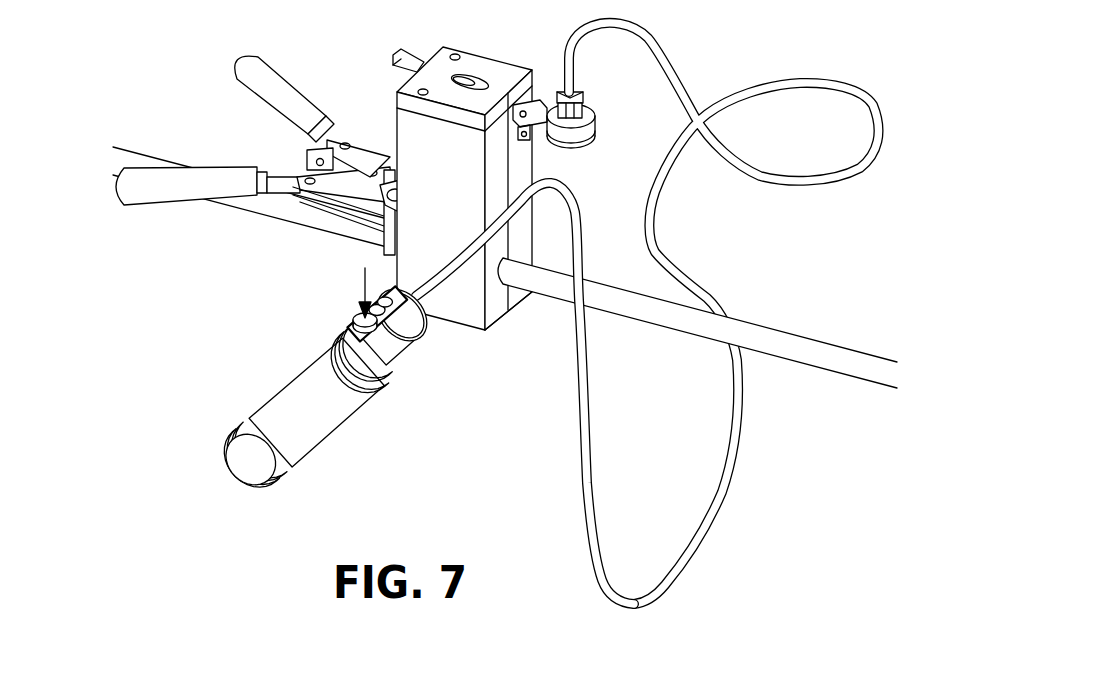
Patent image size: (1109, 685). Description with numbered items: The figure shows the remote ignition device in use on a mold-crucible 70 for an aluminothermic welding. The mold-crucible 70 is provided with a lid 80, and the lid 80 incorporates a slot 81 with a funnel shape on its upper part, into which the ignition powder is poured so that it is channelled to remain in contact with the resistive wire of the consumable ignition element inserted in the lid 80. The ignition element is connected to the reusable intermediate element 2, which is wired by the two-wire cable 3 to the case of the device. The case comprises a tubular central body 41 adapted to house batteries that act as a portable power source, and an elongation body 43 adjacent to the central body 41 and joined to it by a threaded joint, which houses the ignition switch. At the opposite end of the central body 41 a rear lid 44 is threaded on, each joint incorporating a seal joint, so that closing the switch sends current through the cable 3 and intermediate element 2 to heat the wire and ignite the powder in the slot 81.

The mold-crucible 70 is at (376, 68).
The lid 80 is at (493, 57).
The slot 81 is at (466, 77).
The intermediate element 2 is at (603, 93).
The two-wire cable 3 is at (583, 443).
The central body 41 is at (298, 415).
The elongation body 43 is at (395, 332).
The rear lid 44 is at (243, 467).